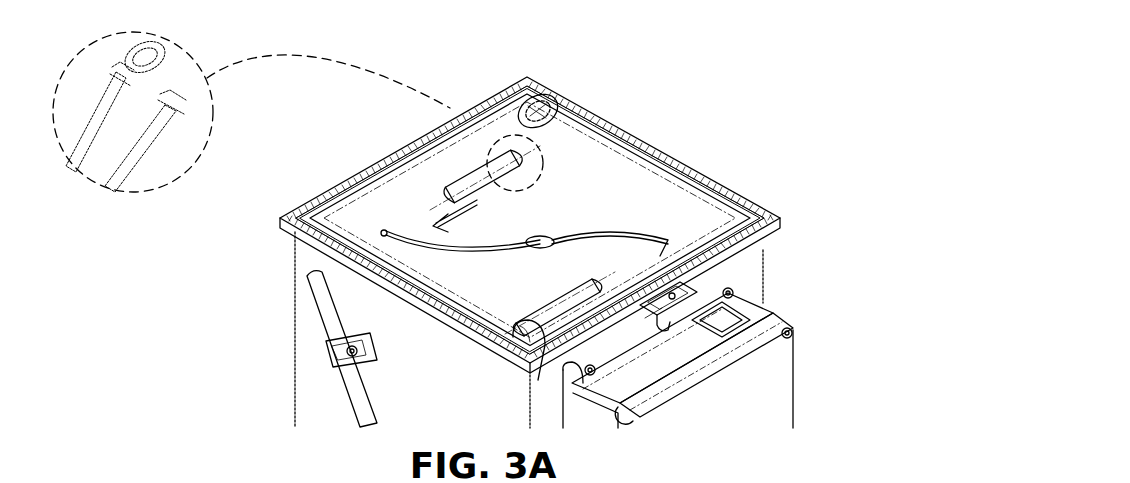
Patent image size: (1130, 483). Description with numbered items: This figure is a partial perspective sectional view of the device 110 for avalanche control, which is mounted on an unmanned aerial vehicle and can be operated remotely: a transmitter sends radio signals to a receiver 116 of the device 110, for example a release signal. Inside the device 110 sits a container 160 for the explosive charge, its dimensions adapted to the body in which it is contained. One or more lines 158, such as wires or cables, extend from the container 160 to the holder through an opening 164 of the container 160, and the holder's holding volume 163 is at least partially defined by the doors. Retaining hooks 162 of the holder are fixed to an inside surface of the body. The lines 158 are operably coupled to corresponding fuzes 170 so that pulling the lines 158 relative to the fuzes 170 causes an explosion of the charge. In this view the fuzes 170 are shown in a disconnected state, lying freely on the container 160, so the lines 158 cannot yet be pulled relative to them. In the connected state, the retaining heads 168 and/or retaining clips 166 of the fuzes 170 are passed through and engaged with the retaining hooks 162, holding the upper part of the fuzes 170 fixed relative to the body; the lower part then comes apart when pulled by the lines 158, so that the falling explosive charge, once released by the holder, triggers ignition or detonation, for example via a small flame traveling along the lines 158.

The device 110 is at (1043, 117).
The receiver 116 is at (795, 382).
The lines 158 is at (427, 230).
The container 160 is at (560, 155).
The retaining hooks 162 is at (455, 113).
The holding volume 163 is at (657, 236).
The opening 164 is at (663, 210).
The retaining clips 166 is at (177, 113).
The retaining heads 168 is at (150, 77).
The fuzes 170 is at (442, 187).